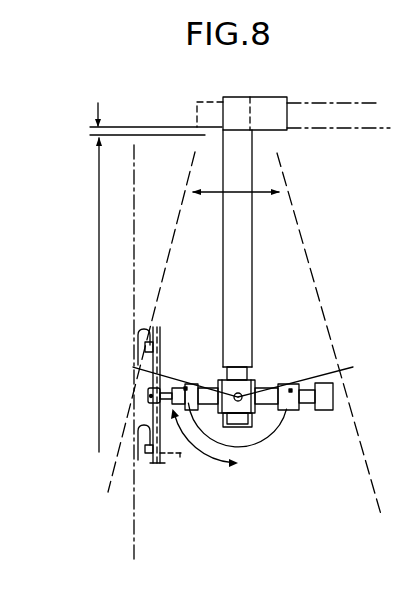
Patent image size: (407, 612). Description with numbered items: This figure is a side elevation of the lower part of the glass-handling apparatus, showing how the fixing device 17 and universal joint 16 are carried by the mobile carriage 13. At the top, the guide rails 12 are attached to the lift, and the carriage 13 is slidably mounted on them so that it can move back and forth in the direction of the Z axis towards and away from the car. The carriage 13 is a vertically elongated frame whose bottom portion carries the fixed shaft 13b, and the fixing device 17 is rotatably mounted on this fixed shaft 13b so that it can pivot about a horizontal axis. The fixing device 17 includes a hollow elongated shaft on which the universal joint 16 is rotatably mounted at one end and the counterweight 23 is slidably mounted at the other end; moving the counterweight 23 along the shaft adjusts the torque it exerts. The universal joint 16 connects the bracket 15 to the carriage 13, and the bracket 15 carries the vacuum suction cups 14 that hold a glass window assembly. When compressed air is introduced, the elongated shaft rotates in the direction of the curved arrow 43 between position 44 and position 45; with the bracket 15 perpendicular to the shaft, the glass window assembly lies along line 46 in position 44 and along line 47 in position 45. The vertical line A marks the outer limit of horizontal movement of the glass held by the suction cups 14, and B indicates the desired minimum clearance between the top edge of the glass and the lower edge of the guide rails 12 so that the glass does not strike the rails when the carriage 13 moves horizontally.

The guide rails 12 is at (319, 109).
The mobile carriage 13 is at (252, 273).
The fixed shaft 13b is at (242, 394).
The vacuum suction cups 14 is at (145, 470).
The bracket 15 is at (142, 452).
The universal joint 16 is at (164, 388).
The fixing device 17 is at (258, 411).
The counterweight 23 is at (323, 411).
The arrow 43 is at (229, 464).
The position 44 is at (133, 367).
The position 45 is at (353, 367).
The line 46 is at (186, 190).
The line 47 is at (316, 258).
The vertical line A is at (99, 265).
The minimum clearance B is at (98, 104).
The Z-axis direction Z is at (272, 198).